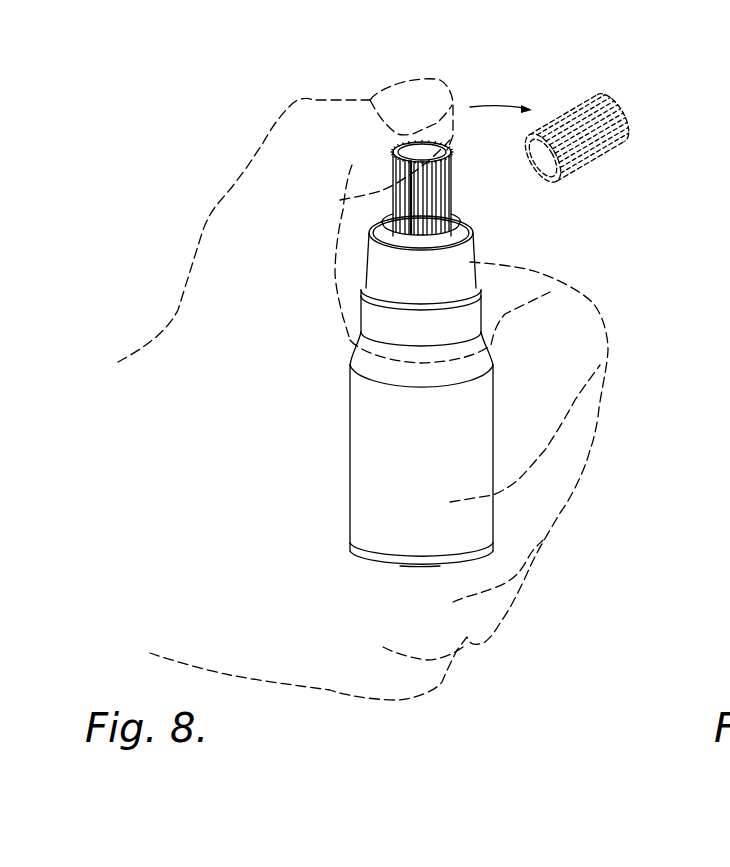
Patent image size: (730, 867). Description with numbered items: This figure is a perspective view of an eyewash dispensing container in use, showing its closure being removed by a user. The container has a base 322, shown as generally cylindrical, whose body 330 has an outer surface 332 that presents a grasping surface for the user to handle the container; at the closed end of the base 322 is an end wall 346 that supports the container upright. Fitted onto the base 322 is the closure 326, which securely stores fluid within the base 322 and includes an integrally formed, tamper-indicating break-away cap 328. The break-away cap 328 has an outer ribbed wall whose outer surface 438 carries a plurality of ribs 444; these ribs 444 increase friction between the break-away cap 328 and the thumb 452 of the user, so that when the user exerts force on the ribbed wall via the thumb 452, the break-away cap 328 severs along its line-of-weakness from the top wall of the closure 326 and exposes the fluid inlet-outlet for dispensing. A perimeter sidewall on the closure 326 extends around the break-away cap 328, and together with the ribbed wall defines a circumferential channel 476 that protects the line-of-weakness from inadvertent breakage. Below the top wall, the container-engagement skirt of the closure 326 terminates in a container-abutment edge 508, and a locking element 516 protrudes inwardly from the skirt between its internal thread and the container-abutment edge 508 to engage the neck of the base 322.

The thumb 452 is at (250, 164).
The break-away cap 328 is at (514, 162).
The ribs 444 is at (441, 181).
The outer surface 438 is at (440, 202).
The circumferential channel 476 is at (458, 220).
The closure 326 is at (410, 251).
The locking element 516 is at (490, 313).
The container-abutment edge 508 is at (465, 345).
The base 322 is at (479, 473).
The body 330 is at (470, 524).
The outer surface 332 is at (462, 540).
The end wall 346 is at (419, 573).